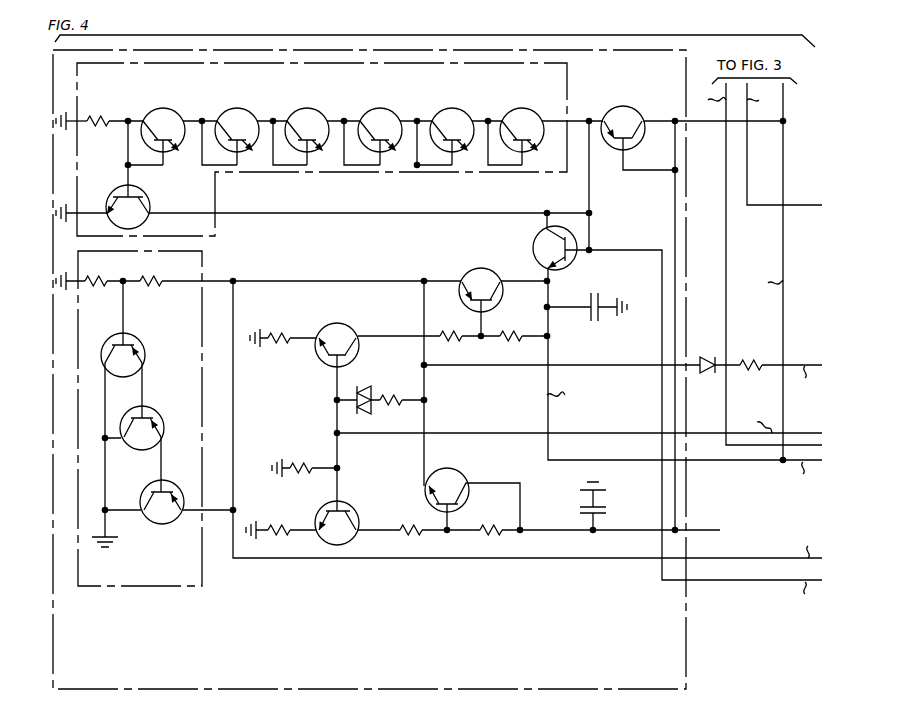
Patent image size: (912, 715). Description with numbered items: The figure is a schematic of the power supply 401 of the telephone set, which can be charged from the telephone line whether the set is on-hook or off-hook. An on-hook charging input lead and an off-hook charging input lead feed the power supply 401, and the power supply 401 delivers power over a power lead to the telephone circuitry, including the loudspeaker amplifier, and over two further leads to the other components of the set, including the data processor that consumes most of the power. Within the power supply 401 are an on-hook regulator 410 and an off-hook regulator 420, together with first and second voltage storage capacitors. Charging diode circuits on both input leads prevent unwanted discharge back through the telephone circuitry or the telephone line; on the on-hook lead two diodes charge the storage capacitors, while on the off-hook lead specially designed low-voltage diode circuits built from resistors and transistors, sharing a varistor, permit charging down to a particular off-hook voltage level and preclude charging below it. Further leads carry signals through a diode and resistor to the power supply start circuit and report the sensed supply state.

The power supply 401 is at (238, 688).
The on-hook regulator 410 is at (567, 86).
The off-hook regulator 420 is at (165, 587).